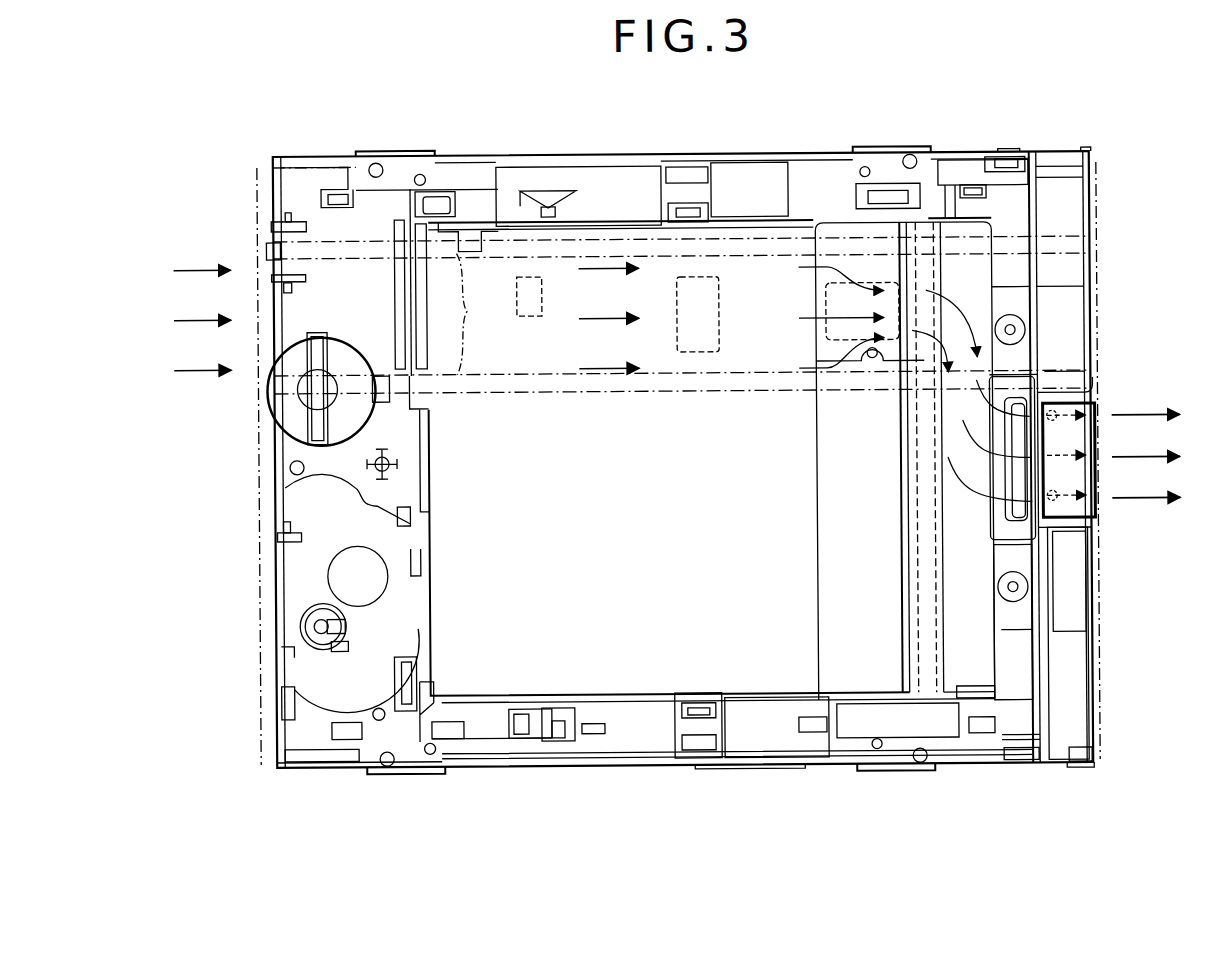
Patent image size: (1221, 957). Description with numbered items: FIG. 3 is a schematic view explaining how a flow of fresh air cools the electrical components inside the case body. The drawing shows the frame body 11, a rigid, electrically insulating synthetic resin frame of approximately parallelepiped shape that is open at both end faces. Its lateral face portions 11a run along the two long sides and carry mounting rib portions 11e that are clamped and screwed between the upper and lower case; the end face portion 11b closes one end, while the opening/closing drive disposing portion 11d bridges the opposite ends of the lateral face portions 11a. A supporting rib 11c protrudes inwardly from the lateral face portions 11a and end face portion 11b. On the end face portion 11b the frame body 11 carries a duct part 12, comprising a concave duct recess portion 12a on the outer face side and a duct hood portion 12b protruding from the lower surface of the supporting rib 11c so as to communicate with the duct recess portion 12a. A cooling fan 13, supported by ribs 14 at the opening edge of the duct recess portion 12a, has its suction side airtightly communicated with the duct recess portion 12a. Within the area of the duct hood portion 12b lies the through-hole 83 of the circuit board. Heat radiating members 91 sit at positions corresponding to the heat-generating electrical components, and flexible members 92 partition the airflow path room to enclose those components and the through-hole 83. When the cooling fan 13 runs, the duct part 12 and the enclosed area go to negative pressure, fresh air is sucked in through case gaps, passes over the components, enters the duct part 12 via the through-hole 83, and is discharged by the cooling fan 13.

The frame body 11 is at (1015, 153).
The lateral face portions 11a is at (602, 162).
The end face portion 11b is at (1092, 624).
The supporting rib 11c is at (762, 745).
The opening/closing drive disposing portion 11d is at (290, 198).
The mounting rib portions 11e is at (400, 174).
The duct part 12 is at (975, 607).
The duct recess portion 12a is at (1037, 557).
The duct hood portion 12b is at (974, 695).
The cooling fan 13 is at (1087, 500).
The ribs 14 is at (1085, 388).
The through-hole 83 is at (802, 333).
The heat radiating members 91 is at (536, 320).
The flexible members 92 is at (447, 297).